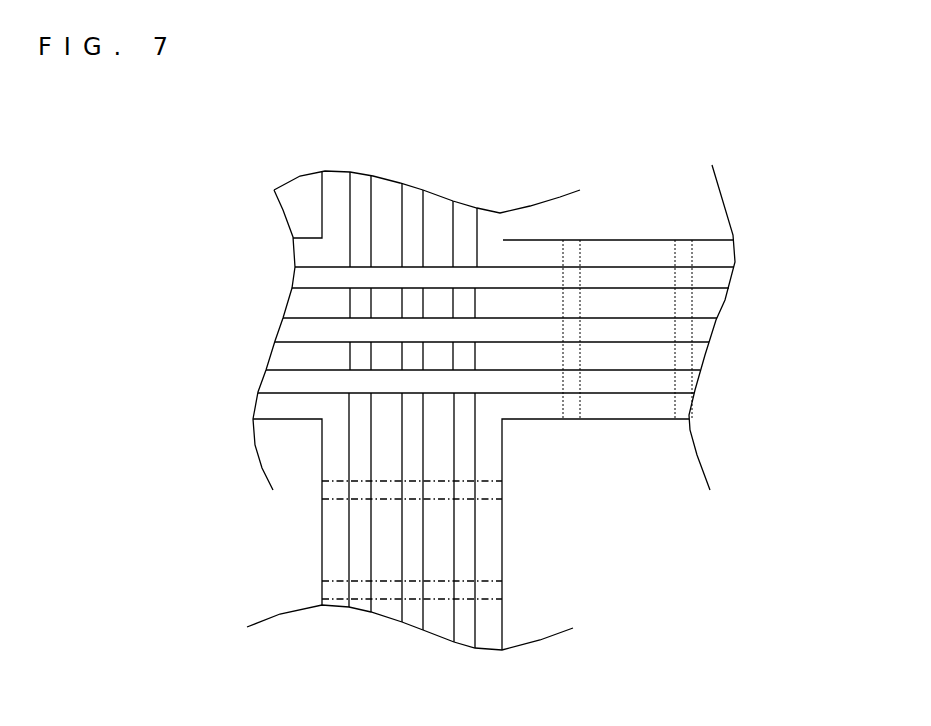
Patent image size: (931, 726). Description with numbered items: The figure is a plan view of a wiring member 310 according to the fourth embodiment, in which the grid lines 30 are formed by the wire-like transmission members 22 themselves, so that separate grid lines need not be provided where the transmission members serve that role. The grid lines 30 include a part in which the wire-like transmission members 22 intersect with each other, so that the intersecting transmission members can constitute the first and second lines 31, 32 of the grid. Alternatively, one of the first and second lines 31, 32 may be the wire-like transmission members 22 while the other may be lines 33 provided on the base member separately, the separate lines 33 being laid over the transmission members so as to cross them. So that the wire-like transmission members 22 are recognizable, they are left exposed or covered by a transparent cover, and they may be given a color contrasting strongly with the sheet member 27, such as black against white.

The wiring member 310 is at (288, 158).
The grid lines 30 is at (560, 258).
The wire-like transmission members 22 is at (635, 382).
The first lines 31 is at (609, 335).
The second lines 32 is at (398, 553).
The lines 33 is at (673, 400).
The sheet member 27 is at (490, 614).